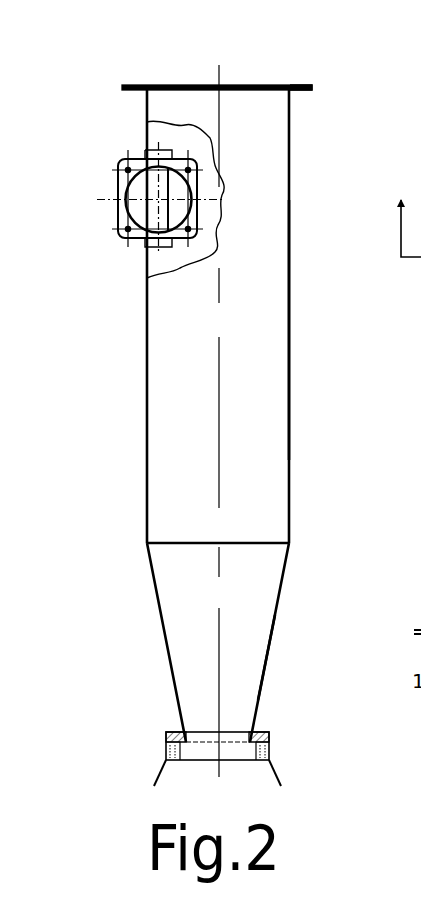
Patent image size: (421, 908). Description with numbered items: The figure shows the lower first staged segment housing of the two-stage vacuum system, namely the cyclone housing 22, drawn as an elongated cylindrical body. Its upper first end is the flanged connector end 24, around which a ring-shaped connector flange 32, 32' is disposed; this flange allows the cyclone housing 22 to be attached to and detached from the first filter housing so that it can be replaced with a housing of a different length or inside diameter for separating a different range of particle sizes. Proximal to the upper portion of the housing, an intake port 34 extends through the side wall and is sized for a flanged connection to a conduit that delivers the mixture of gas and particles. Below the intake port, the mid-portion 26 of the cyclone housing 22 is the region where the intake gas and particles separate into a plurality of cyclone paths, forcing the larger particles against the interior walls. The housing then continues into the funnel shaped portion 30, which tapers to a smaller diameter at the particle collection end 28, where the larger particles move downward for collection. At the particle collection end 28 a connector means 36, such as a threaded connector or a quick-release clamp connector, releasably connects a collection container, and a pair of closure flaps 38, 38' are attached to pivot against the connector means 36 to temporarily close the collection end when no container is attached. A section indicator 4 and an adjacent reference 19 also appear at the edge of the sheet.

The cyclone housing 22 is at (196, 447).
The flanged connector end 24 is at (158, 78).
The mid-portion 26 is at (290, 326).
The particle collection end 28 is at (253, 701).
The funnel shaped portion 30 is at (267, 597).
The connector flange 32 is at (180, 69).
The connector flange 32' is at (327, 60).
The intake port 34 is at (118, 230).
The connector means 36 is at (166, 738).
The closure flap 38 is at (126, 783).
The closure flap 38' is at (309, 783).
The section line for FIG. 4 is at (405, 202).
The adjacent component 19 is at (420, 306).